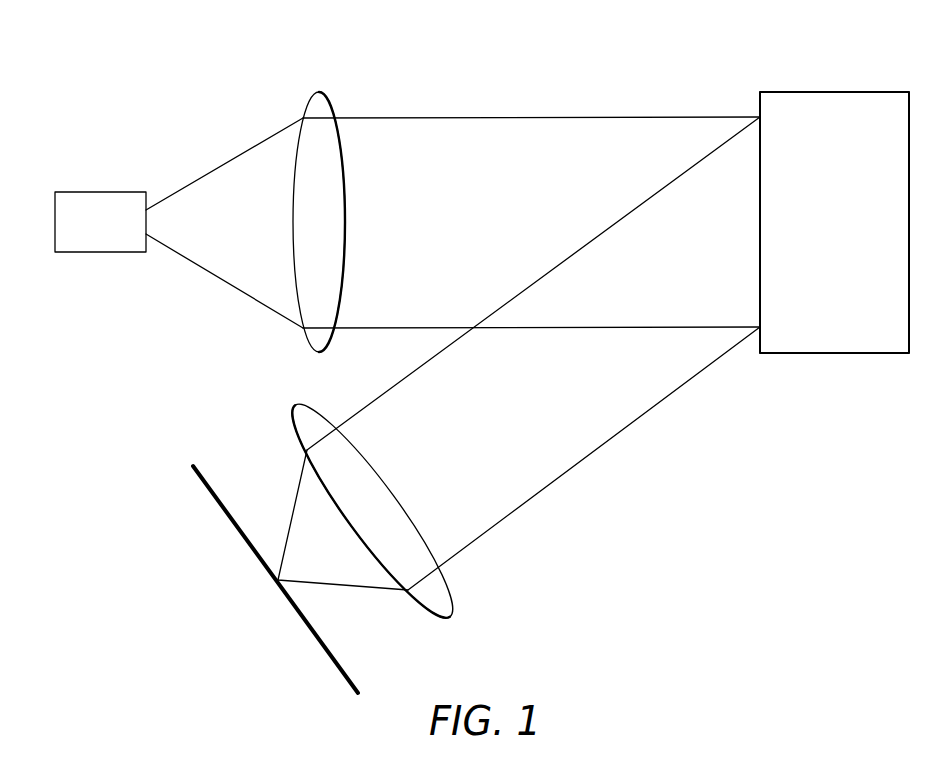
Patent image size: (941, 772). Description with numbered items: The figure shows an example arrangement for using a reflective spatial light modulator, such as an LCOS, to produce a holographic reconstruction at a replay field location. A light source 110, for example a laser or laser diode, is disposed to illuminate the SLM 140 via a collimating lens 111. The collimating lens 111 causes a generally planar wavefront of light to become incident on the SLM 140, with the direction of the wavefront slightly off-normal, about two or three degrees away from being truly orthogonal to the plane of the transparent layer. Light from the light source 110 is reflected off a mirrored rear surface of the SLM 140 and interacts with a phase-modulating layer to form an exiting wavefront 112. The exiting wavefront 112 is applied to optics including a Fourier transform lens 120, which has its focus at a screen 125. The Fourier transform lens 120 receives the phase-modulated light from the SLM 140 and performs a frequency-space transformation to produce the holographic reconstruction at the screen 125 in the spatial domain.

The light source 110 is at (78, 192).
The collimating lens 111 is at (318, 92).
The exiting wavefront 112 is at (639, 420).
The Fourier transform lens 120 is at (450, 613).
The screen 125 is at (335, 663).
The SLM 140 is at (879, 91).